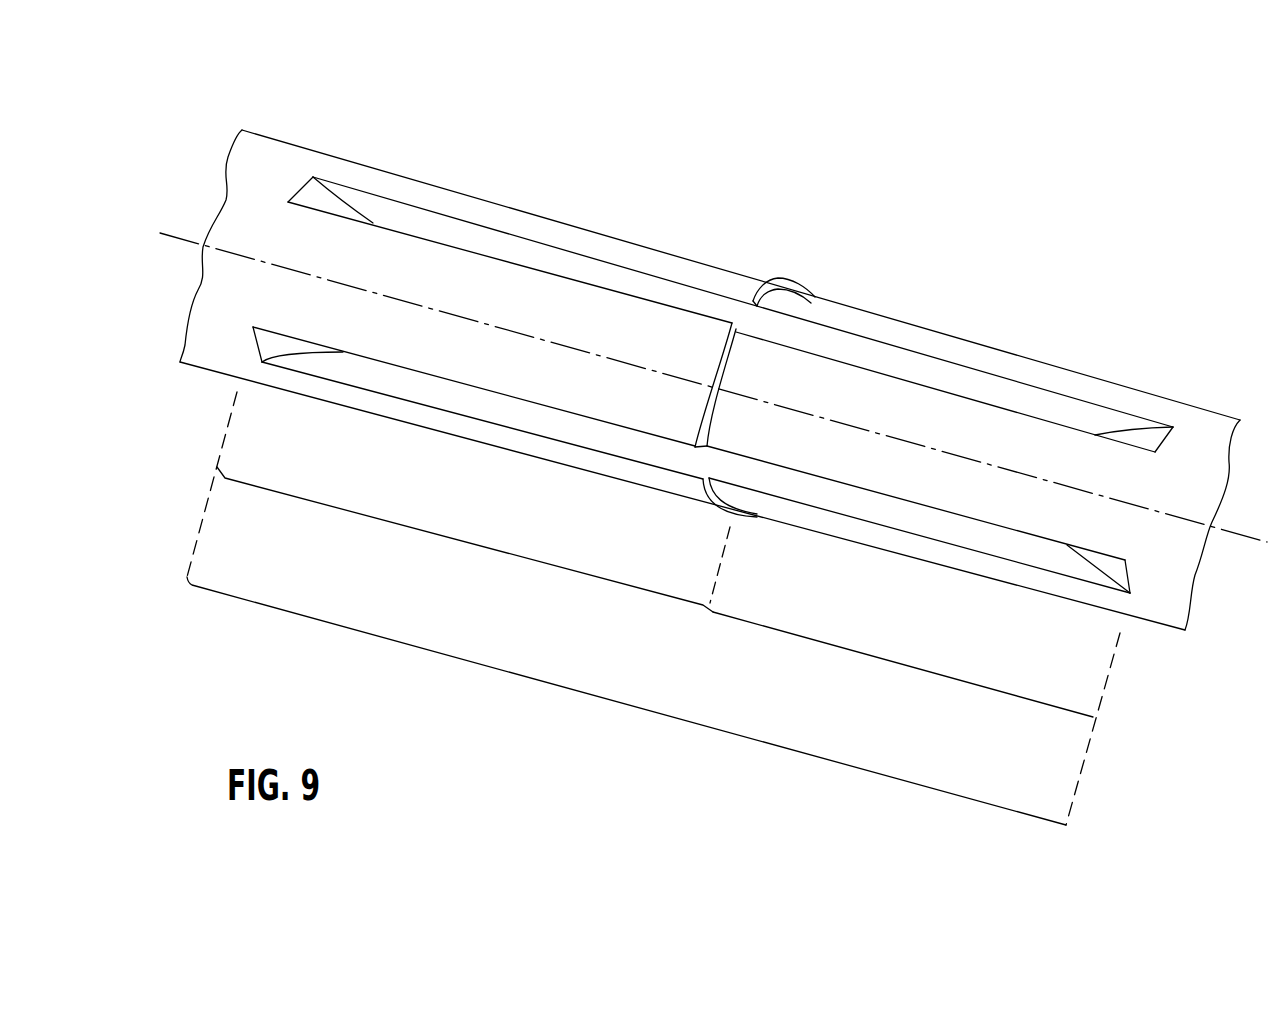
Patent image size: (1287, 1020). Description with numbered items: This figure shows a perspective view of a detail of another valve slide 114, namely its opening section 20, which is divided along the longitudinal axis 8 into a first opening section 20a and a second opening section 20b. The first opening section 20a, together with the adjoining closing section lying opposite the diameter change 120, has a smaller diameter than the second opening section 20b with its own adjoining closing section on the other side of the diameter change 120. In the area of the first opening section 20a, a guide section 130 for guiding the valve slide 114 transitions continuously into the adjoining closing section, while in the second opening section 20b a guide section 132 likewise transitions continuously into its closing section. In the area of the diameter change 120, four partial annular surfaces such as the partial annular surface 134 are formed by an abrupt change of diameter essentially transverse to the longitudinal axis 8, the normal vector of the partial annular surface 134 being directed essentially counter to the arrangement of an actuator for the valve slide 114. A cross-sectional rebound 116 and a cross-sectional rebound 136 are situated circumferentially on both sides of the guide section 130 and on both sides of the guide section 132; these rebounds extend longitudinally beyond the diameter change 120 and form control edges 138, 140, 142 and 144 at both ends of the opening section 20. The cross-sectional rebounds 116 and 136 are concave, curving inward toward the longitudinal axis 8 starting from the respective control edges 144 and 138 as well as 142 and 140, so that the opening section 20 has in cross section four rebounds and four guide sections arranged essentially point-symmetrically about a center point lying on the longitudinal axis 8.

The longitudinal axis 8 is at (183, 238).
The opening section 20 is at (620, 705).
The first opening section 20a is at (897, 667).
The second opening section 20b is at (458, 545).
The valve slide 114 is at (1108, 234).
The cross-sectional rebound 116 is at (688, 302).
The diameter change 120 is at (819, 278).
The guide section 130 is at (992, 488).
The guide section 132 is at (442, 353).
The partial annular surface 134 is at (718, 368).
The cross-sectional rebound 136 is at (650, 448).
The control edge 138 is at (1173, 440).
The control edge 140 is at (1131, 577).
The control edge 142 is at (250, 346).
The control edge 144 is at (297, 189).